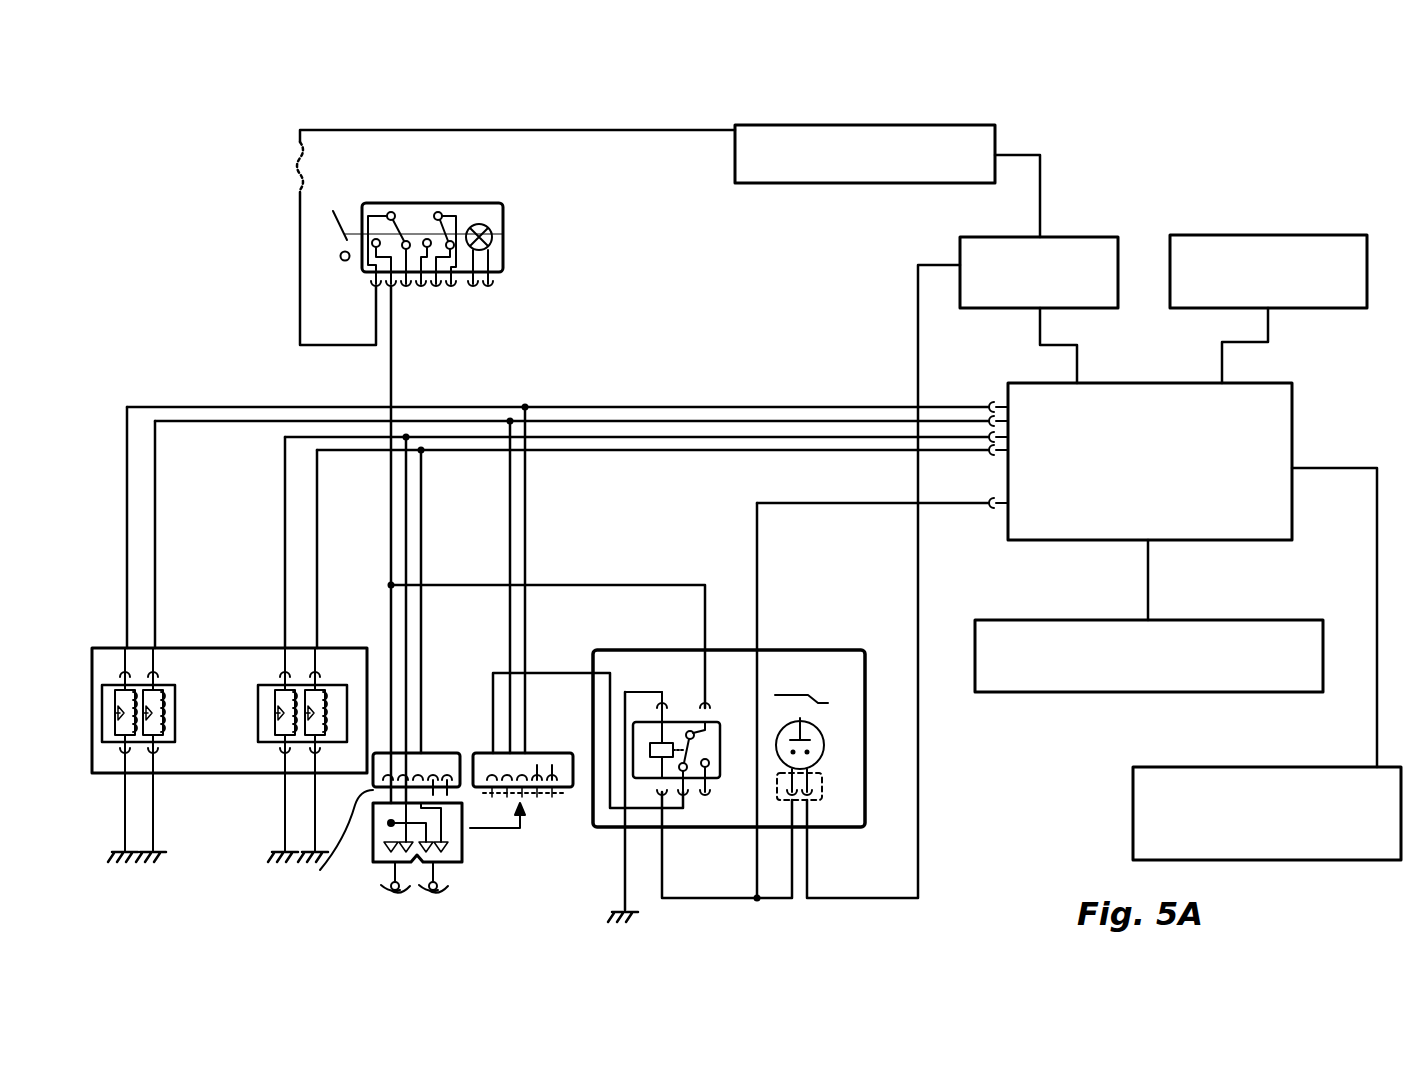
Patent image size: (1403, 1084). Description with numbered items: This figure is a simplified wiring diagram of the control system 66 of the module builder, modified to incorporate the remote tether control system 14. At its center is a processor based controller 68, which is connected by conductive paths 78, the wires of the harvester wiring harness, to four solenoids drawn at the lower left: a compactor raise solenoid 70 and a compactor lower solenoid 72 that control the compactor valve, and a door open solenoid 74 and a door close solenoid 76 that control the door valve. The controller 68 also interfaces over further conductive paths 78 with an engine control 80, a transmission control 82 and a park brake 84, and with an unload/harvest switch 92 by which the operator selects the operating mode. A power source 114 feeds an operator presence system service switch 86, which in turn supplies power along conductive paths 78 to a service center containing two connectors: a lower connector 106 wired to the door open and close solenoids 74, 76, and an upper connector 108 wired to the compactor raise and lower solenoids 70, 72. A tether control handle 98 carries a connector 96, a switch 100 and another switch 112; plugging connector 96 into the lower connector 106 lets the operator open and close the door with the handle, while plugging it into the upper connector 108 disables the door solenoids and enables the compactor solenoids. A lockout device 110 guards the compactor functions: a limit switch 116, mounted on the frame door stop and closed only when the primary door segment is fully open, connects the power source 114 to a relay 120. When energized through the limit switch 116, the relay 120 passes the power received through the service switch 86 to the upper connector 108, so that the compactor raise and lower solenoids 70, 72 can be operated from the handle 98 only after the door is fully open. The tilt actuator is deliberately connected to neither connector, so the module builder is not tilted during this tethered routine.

The control system 66 is at (1235, 160).
The remote tether control system 14 is at (1222, 157).
The controller 68 is at (1292, 425).
The compactor raise solenoid 70 is at (115, 690).
The compactor lower solenoid 72 is at (170, 690).
The door open solenoid 74 is at (272, 690).
The door close solenoid 76 is at (333, 690).
The conductive paths 78 is at (575, 130).
The engine control 80 is at (1092, 237).
The transmission control 82 is at (1318, 235).
The park brake 84 is at (1073, 692).
The operator presence system service switch 86 is at (503, 237).
The unload/harvest switch 92 is at (1238, 767).
The connector 96 is at (331, 856).
The tether control handle 98 is at (462, 848).
The switch 100 is at (445, 890).
The lower connector 106 is at (452, 753).
The upper connector 108 is at (547, 753).
The lockout device 110 is at (865, 820).
The switch 112 is at (405, 892).
The power source 114 is at (960, 125).
The limit switch 116 is at (822, 752).
The relay 120 is at (722, 775).